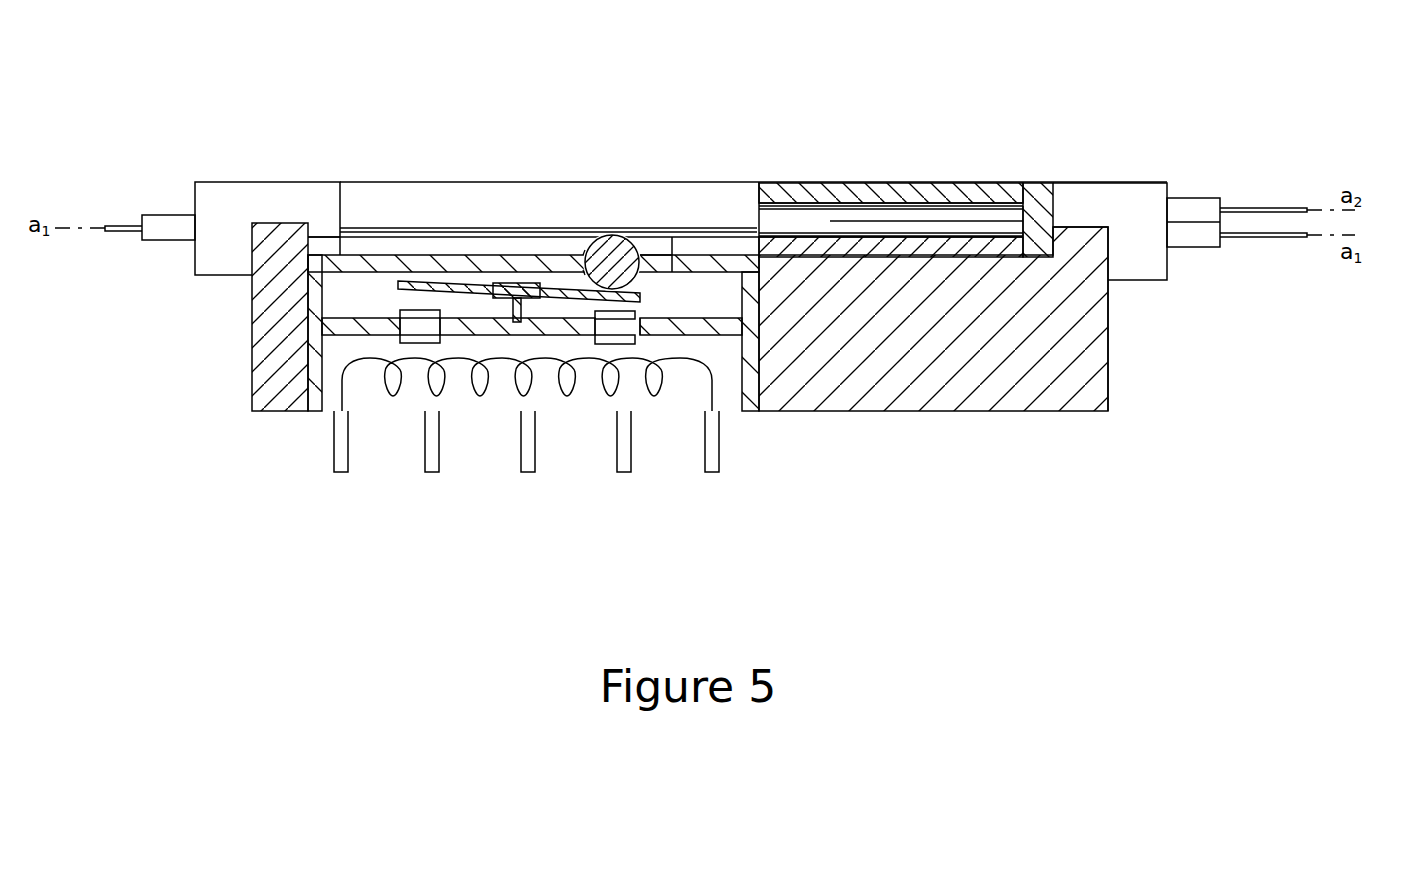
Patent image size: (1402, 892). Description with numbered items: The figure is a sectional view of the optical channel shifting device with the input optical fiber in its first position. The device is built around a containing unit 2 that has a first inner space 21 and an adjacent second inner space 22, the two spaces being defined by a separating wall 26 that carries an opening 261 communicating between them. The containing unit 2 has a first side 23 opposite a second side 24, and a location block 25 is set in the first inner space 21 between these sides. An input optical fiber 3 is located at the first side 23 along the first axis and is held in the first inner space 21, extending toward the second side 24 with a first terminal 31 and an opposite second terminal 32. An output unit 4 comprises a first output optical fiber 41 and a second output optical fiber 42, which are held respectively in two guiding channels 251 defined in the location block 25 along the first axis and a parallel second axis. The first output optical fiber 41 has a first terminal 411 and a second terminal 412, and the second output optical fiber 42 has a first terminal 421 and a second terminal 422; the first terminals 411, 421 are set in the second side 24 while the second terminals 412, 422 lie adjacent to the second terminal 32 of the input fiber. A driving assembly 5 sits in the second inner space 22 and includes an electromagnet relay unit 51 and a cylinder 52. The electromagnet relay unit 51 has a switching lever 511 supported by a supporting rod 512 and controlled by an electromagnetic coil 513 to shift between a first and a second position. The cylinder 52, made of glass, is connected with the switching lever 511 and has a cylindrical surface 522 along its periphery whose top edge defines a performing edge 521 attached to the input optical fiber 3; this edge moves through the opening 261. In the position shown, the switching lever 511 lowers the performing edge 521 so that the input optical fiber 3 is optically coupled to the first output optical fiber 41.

The containing unit 2 is at (682, 313).
The input optical fiber 3 is at (431, 167).
The output unit 4 is at (1033, 273).
The driving assembly 5 is at (623, 385).
The first inner space 21 is at (420, 183).
The second inner space 22 is at (330, 403).
The first side 23 is at (265, 350).
The second side 24 is at (1108, 370).
The location block 25 is at (919, 293).
The separating wall 26 is at (453, 262).
The first terminal 31 is at (340, 228).
The second terminal 32 is at (733, 228).
The first output optical fiber 41 is at (1203, 247).
The second output optical fiber 42 is at (1195, 197).
The electromagnet relay unit 51 is at (494, 436).
The cylinder 52 is at (668, 308).
The guiding channels 251 is at (985, 205).
The opening 261 is at (578, 265).
The first terminal 411 is at (1020, 227).
The second terminal 412 is at (778, 230).
The first terminal 421 is at (1035, 215).
The second terminal 422 is at (758, 187).
The switching lever 511 is at (398, 285).
The supporting rod 512 is at (522, 322).
The electromagnetic coil 513 is at (518, 322).
The performing edge 521 is at (613, 235).
The cylindrical surface 522 is at (640, 255).